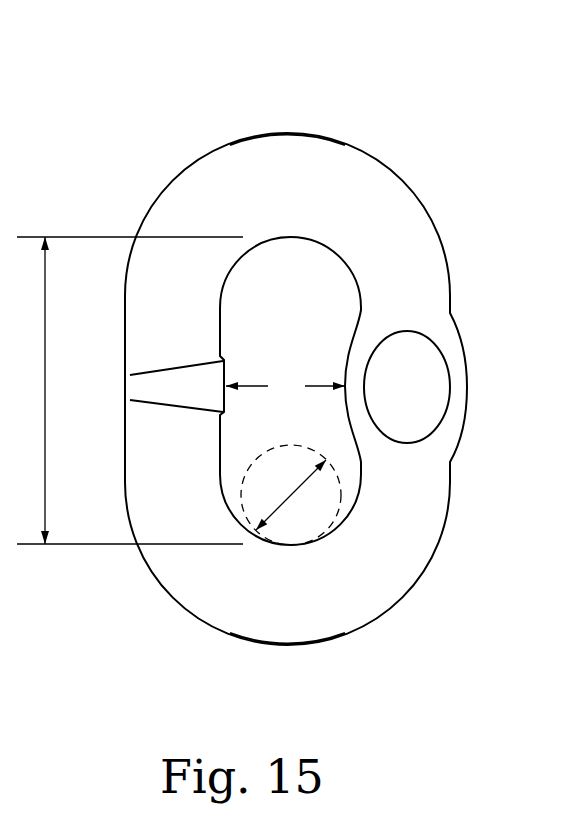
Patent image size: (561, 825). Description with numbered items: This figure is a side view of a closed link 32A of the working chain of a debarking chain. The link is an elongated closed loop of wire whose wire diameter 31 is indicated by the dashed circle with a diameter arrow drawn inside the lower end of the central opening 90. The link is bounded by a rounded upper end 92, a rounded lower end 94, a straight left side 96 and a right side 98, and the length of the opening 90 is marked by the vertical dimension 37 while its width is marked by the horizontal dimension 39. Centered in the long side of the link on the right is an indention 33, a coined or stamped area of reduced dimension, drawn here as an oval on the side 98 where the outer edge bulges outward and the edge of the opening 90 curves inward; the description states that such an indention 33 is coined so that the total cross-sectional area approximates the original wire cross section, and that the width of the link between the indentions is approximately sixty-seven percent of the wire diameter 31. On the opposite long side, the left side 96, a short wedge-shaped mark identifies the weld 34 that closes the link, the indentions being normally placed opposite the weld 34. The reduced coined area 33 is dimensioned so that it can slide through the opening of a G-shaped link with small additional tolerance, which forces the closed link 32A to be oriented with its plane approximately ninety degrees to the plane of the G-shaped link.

The wire diameter 31 is at (295, 498).
The link plate 32A is at (158, 602).
The indention 33 is at (427, 367).
The weld 34 is at (203, 392).
The slot length 37 is at (47, 392).
The slot width 39 is at (285, 387).
The slot 90 is at (302, 338).
The upper end 92 is at (301, 148).
The lower end 94 is at (300, 625).
The left side wall 96 is at (129, 313).
The right side wall 98 is at (433, 277).